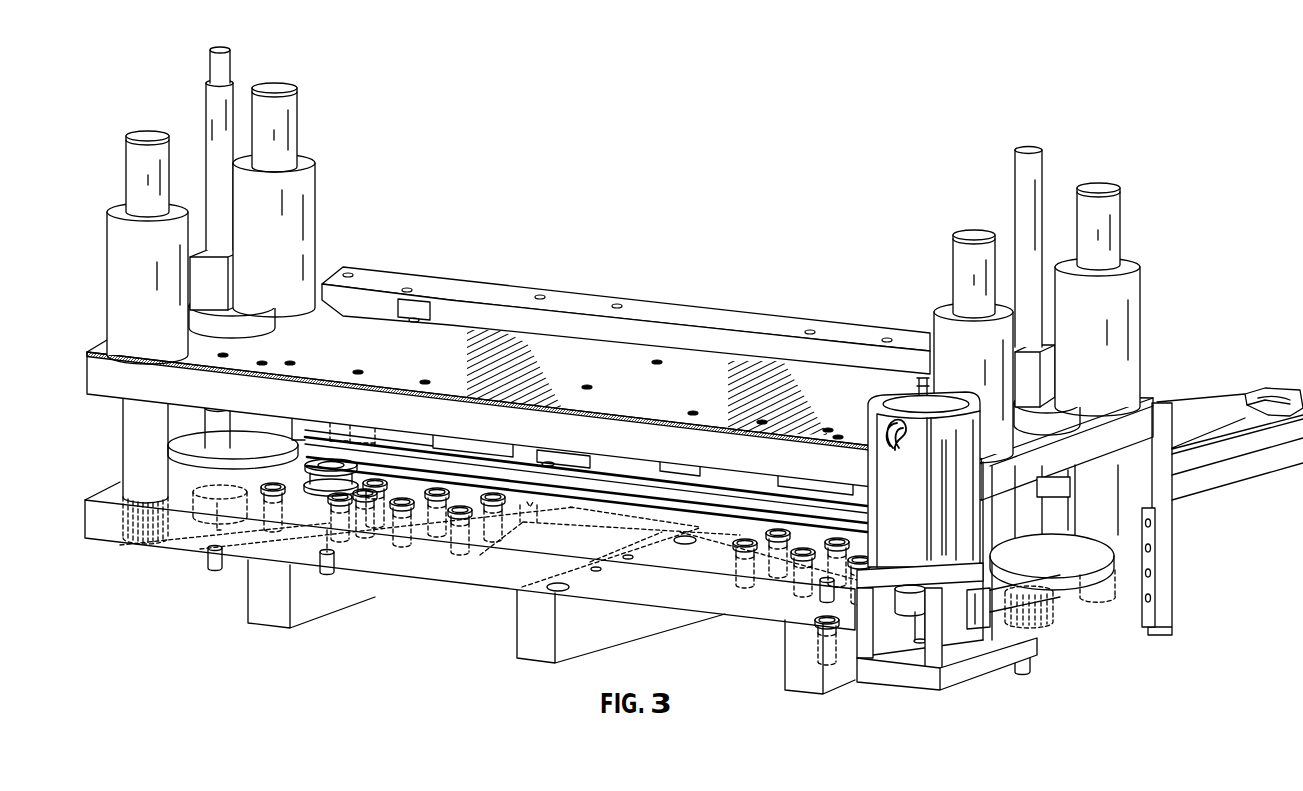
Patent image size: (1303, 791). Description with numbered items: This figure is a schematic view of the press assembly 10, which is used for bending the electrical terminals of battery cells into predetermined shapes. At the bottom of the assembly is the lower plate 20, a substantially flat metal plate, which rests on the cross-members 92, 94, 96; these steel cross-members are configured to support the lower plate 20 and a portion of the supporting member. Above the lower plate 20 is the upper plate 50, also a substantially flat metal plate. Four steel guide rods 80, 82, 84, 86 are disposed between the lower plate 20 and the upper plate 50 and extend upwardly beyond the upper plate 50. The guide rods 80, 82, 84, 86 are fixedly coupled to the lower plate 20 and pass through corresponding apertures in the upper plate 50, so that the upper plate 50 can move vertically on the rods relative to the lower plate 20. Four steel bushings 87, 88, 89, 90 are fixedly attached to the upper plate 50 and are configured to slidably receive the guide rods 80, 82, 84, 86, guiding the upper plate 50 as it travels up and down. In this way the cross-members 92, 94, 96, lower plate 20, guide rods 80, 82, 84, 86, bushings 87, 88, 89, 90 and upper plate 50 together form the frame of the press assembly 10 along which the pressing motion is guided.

The press assembly 10 is at (636, 242).
The lower plate 20 is at (86, 514).
The upper plate 50 is at (89, 366).
The guide rod 80 is at (1099, 190).
The guide rod 82 is at (969, 236).
The guide rod 84 is at (275, 88).
The guide rod 86 is at (146, 137).
The bushing 87 is at (1131, 318).
The bushing 88 is at (937, 333).
The bushing 89 is at (307, 224).
The bushing 90 is at (120, 252).
The cross-member 92 is at (798, 678).
The cross-member 94 is at (536, 650).
The cross-member 96 is at (273, 621).